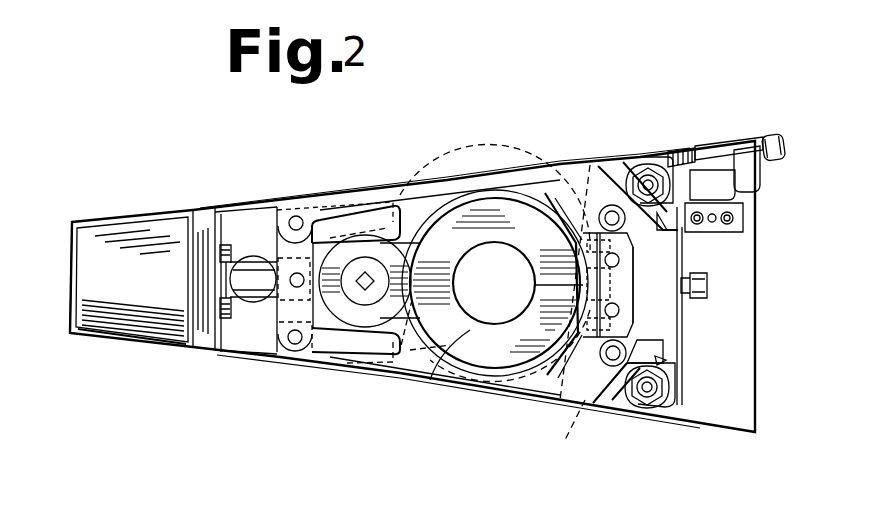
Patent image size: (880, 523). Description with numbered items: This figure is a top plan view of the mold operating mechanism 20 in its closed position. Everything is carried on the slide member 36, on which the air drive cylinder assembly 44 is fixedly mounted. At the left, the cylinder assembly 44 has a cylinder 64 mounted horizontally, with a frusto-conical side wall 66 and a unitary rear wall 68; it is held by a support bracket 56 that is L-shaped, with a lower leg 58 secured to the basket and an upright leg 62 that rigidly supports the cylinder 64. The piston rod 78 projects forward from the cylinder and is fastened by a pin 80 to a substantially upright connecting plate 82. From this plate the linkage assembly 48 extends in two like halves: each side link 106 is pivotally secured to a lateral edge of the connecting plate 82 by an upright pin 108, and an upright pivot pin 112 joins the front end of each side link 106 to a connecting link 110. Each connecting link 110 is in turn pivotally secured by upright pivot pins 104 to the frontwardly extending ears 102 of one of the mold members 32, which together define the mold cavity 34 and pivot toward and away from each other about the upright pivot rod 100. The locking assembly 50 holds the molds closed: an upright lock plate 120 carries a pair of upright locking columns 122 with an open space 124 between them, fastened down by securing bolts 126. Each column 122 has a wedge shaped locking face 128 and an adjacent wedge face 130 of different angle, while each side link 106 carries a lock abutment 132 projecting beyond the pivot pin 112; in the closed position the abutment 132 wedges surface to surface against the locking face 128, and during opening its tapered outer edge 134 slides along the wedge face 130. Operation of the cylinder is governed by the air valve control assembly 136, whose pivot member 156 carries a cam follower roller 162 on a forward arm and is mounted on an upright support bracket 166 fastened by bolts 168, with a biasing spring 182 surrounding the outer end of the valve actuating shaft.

The mold operating mechanism 20 is at (470, 155).
The mold members 32 is at (510, 205).
The mold cavity 34 is at (420, 385).
The slide member 36 is at (737, 414).
The air drive cylinder assembly 44 is at (128, 234).
The linkage assembly 48 is at (353, 192).
The locking assembly 50 is at (622, 170).
The support bracket 56 is at (240, 357).
The lower leg 58 is at (228, 352).
The upright leg 62 is at (203, 352).
The cylinder 64 is at (130, 340).
The frusto-conical side wall 66 is at (166, 285).
The rear wall 68 is at (72, 298).
The piston rod 78 is at (255, 260).
The pin 80 is at (294, 288).
The connecting plate 82 is at (290, 210).
The upright pivot rod 100 is at (378, 275).
The ears 102 is at (440, 225).
The upright pivot pins 104 is at (605, 260).
The side link 106 is at (404, 193).
The upright pin 108 is at (287, 218).
The connecting link 110 is at (568, 438).
The upright pivot pin 112 is at (602, 207).
The lock plate 120 is at (700, 302).
The locking columns 122 is at (655, 160).
The open space 124 is at (660, 254).
The securing bolts 126 is at (648, 185).
The wedge shaped locking face 128 is at (665, 352).
The wedge face 130 is at (604, 175).
The lock abutment 132 is at (678, 238).
The outer edge 134 is at (745, 205).
The air valve control assembly 136 is at (710, 148).
The pivot member 156 is at (746, 148).
The cam follower roller 162 is at (784, 143).
The upright support bracket 166 is at (735, 222).
The bolts 168 is at (733, 215).
The biasing spring 182 is at (680, 150).